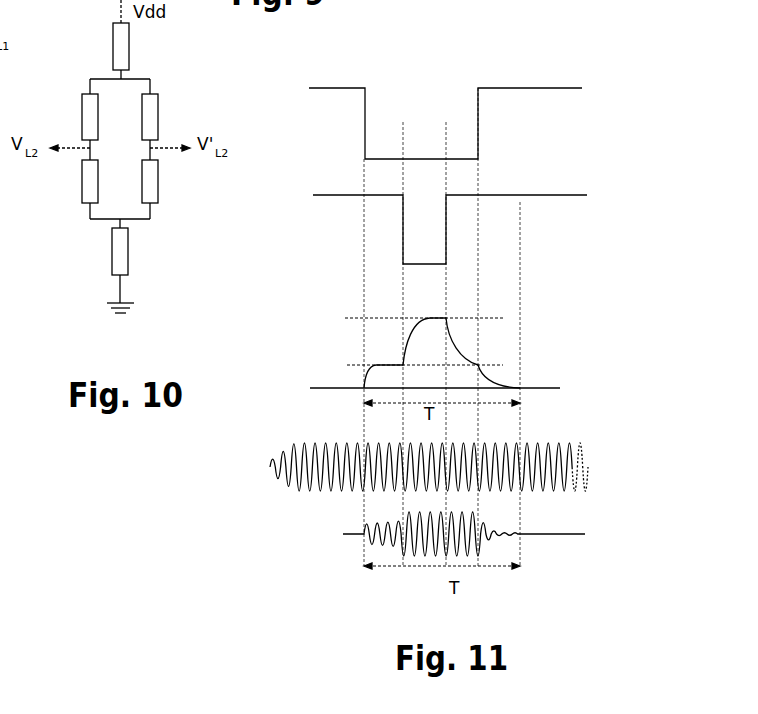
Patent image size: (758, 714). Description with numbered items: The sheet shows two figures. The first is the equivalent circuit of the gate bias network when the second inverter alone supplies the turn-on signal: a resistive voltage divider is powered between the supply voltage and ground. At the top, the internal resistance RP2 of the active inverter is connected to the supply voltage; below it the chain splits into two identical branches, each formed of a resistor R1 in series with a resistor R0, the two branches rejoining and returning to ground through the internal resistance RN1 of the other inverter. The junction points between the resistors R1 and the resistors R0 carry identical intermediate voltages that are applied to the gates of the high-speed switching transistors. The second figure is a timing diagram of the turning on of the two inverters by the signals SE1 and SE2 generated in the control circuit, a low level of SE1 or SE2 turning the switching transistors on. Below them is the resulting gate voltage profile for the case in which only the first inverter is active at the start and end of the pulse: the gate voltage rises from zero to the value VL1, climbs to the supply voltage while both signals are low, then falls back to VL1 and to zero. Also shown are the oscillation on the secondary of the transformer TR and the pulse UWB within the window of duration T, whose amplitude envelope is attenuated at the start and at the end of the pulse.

In FIG. 10, the internal resistance of inverter I2 RP2 is at (135, 51).
In FIG. 10, the resistor R1 is at (118, 117).
In FIG. 10, the resistor R0 is at (121, 181).
In FIG. 10, the internal resistance of inverter I1 RN1 is at (135, 265).
In FIG. 11, the first control signal SE1 is at (429, 123).
In FIG. 11, the second control signal SE2 is at (432, 229).
In FIG. 11, the first intermediate gate voltage value VL1 is at (419, 348).
In FIG. 11, the transformer TR is at (399, 467).
In FIG. 11, the UWB pulse UWB is at (424, 534).